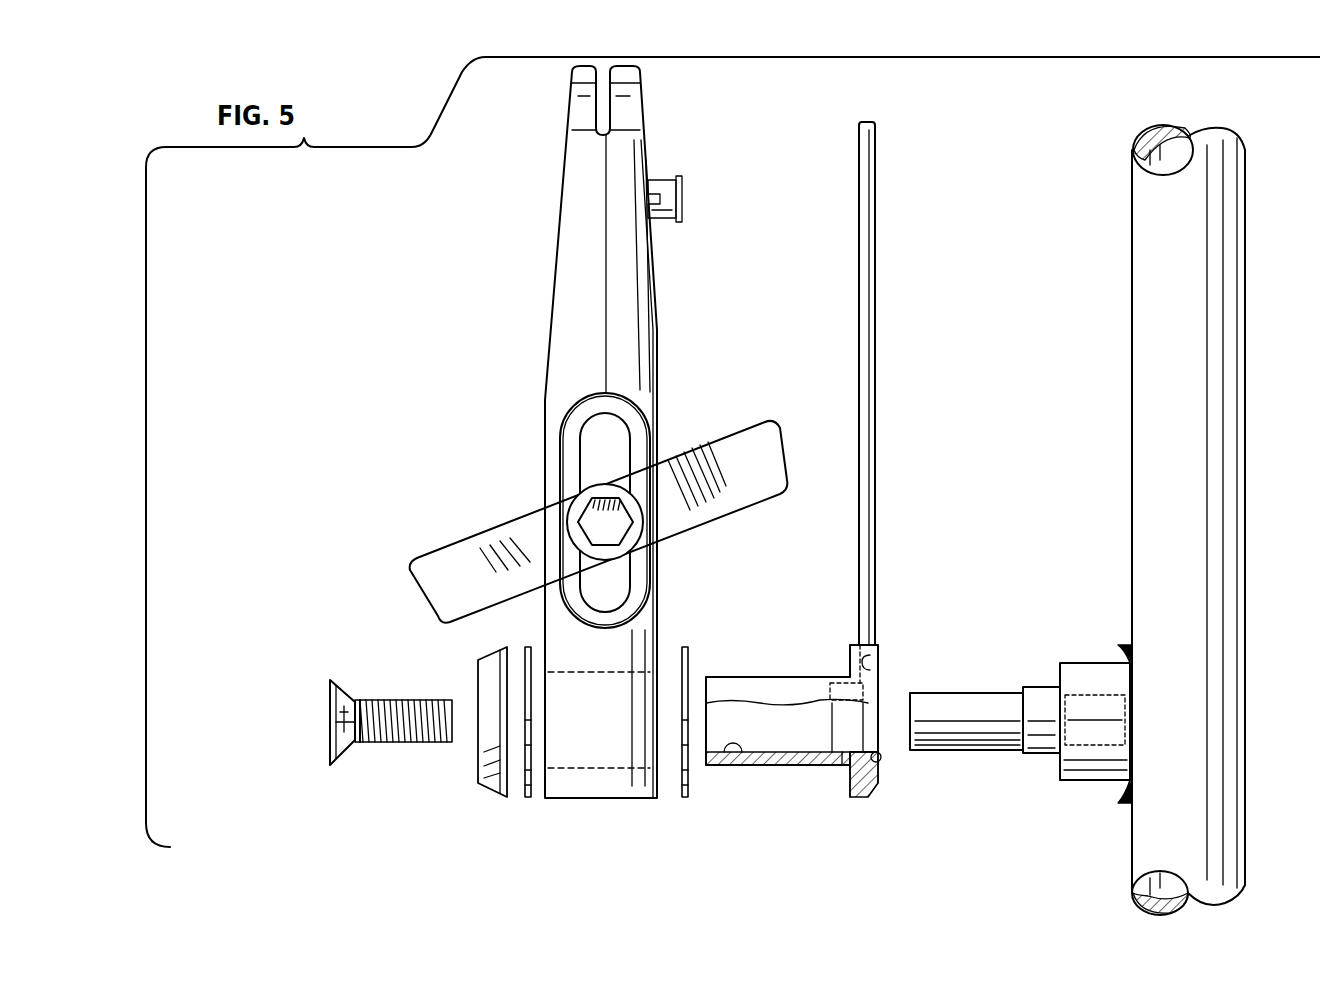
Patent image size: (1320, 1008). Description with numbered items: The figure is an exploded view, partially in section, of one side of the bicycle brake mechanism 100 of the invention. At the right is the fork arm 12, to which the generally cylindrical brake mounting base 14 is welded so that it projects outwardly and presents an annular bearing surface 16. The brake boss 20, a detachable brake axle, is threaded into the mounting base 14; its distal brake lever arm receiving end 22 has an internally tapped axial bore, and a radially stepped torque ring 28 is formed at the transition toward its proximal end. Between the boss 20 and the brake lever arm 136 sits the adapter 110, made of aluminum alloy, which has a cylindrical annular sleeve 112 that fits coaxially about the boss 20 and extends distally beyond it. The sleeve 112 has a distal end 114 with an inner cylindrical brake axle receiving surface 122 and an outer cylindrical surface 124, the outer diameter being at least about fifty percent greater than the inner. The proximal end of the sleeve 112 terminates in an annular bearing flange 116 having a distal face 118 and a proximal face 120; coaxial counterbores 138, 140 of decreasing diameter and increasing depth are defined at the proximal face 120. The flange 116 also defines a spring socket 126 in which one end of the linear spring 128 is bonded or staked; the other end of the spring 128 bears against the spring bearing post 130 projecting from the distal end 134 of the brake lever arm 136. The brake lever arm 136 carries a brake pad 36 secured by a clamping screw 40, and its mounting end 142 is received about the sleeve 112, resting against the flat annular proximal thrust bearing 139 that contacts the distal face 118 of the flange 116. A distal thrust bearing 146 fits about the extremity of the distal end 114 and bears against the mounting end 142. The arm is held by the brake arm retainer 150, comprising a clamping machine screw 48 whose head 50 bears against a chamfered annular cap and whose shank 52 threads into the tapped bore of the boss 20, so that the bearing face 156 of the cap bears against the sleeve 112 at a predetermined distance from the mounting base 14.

The fork arm 12 is at (1160, 372).
The brake mounting base 14 is at (1085, 660).
The annular bearing surface 16 is at (1052, 770).
The brake boss 20 is at (985, 702).
The distal brake lever arm receiving end 22 is at (985, 705).
The torque ring 28 is at (1040, 752).
The brake pad 36 is at (727, 452).
The clamping screw 40 is at (580, 505).
The clamping machine screw 48 is at (338, 733).
The head 50 is at (336, 695).
The shank 52 is at (400, 745).
The bicycle brake mechanism 100 is at (658, 860).
The adapter 110 is at (833, 727).
The annular sleeve 112 is at (763, 676).
The distal end 114 is at (722, 688).
The annular bearing flange 116 is at (865, 800).
The distal face 118 is at (848, 792).
The proximal face 120 is at (880, 790).
The inner cylindrical brake axle receiving surface 122 is at (728, 755).
The outer cylindrical surface 124 is at (826, 668).
The spring socket 126 is at (885, 650).
The linear spring 128 is at (868, 258).
The spring bearing post 130 is at (658, 196).
The distal end 134 is at (567, 197).
The brake lever arm 136 is at (592, 325).
The counterbore 138 is at (882, 758).
The proximal thrust bearing 139 is at (683, 800).
The counterbore 140 is at (845, 750).
The mounting end 142 is at (545, 640).
The distal thrust bearing 146 is at (530, 805).
The brake arm retainer 150 is at (283, 778).
The bearing face 156 is at (512, 790).